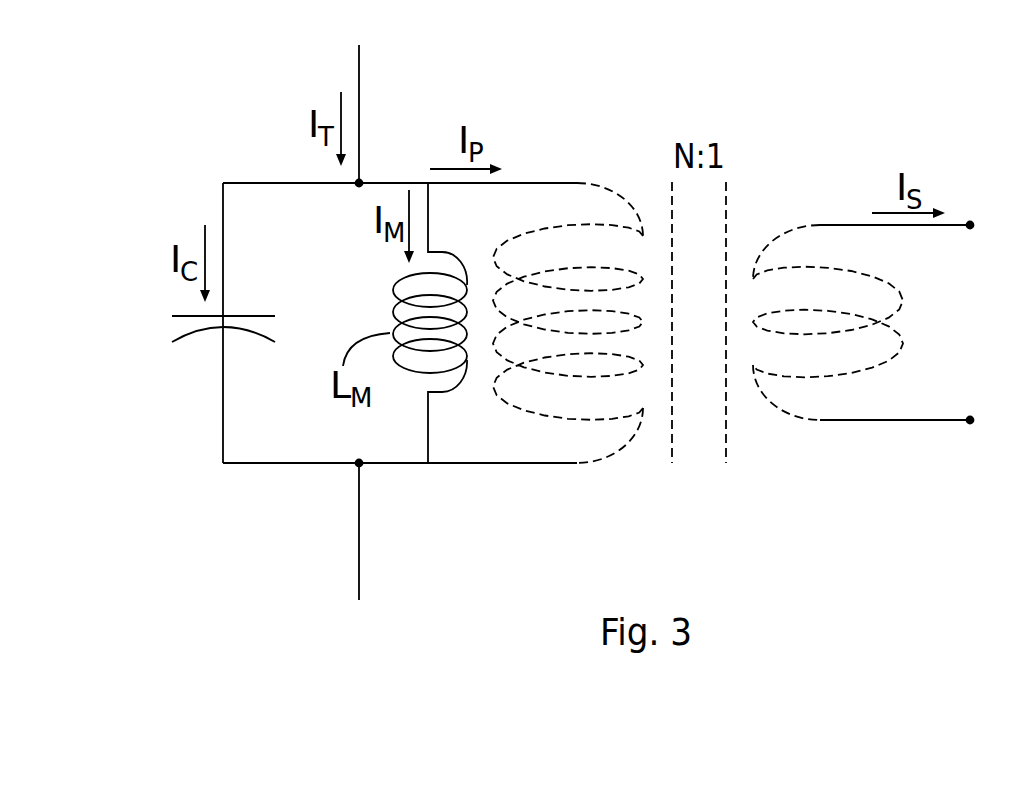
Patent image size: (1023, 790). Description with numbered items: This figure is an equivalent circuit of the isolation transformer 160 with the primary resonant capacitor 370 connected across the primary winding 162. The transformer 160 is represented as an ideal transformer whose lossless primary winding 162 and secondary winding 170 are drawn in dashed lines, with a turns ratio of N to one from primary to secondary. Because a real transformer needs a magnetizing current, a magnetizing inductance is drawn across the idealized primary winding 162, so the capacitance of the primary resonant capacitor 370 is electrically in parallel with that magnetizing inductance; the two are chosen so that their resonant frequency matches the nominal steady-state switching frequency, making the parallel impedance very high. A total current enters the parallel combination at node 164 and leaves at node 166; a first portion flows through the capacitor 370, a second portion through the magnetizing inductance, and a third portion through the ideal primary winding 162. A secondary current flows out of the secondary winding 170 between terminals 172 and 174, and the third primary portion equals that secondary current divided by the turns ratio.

The isolation transformer 160 is at (702, 113).
The primary winding 162 is at (555, 157).
The first node 164 is at (362, 182).
The second node 166 is at (362, 461).
The secondary winding 170 is at (778, 195).
The first secondary terminal 172 is at (972, 225).
The second secondary terminal 174 is at (972, 420).
The primary resonant capacitor 370 is at (238, 313).